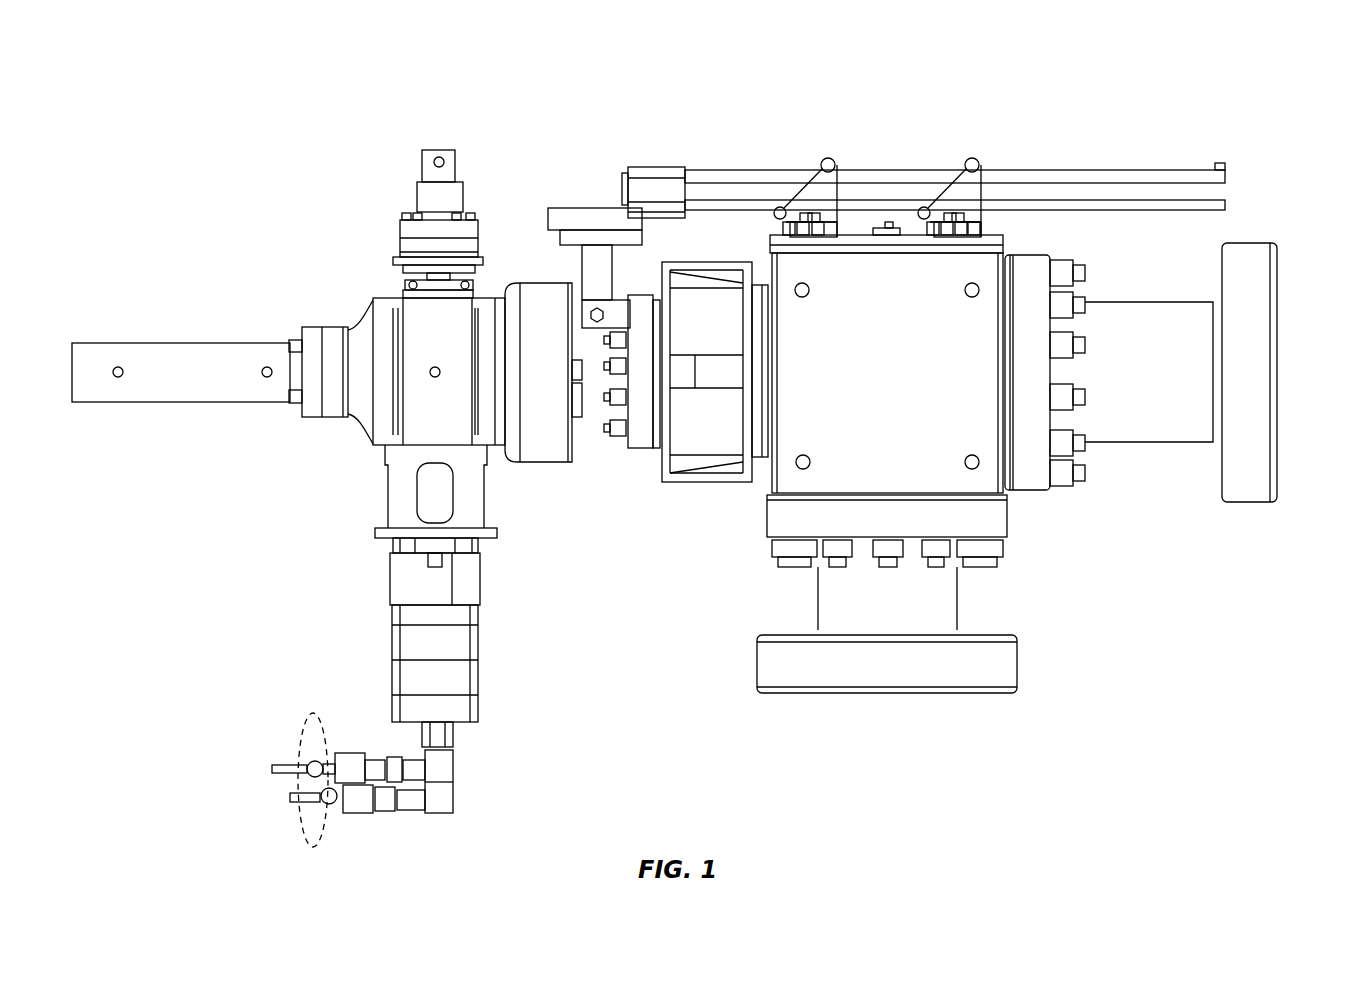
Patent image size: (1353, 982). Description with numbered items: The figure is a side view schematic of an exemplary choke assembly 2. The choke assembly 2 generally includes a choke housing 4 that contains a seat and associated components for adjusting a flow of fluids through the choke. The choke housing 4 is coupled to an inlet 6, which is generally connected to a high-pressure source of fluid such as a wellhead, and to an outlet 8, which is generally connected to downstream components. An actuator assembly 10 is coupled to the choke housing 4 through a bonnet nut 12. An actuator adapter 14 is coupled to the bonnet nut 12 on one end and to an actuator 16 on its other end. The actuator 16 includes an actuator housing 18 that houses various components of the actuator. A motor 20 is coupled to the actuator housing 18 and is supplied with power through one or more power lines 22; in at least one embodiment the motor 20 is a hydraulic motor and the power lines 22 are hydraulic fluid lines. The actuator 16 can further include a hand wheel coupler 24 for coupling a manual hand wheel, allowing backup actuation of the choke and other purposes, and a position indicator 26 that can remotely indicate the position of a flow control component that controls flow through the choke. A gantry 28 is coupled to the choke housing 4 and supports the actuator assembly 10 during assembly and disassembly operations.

The choke assembly 2 is at (1075, 75).
The choke housing 4 is at (953, 280).
The inlet 6 is at (980, 693).
The outlet 8 is at (1280, 272).
The actuator assembly 10 is at (530, 172).
The bonnet nut 12 is at (705, 482).
The actuator adapter 14 is at (641, 440).
The actuator 16 is at (378, 180).
The actuator housing 18 is at (385, 450).
The motor 20 is at (393, 655).
The power lines 22 is at (306, 722).
The hand wheel coupler 24 is at (437, 148).
The position indicator 26 is at (108, 343).
The gantry 28 is at (730, 172).